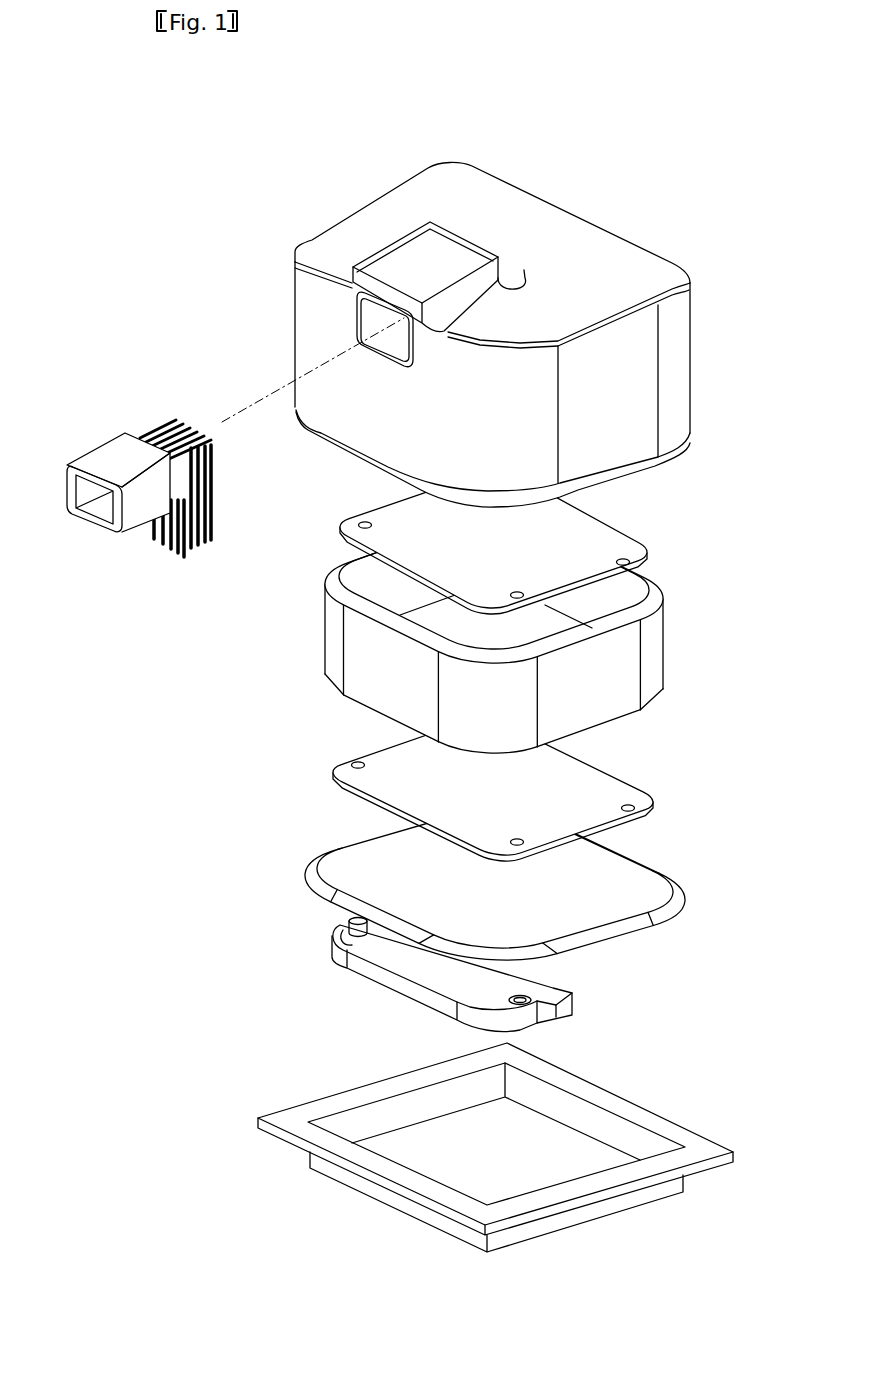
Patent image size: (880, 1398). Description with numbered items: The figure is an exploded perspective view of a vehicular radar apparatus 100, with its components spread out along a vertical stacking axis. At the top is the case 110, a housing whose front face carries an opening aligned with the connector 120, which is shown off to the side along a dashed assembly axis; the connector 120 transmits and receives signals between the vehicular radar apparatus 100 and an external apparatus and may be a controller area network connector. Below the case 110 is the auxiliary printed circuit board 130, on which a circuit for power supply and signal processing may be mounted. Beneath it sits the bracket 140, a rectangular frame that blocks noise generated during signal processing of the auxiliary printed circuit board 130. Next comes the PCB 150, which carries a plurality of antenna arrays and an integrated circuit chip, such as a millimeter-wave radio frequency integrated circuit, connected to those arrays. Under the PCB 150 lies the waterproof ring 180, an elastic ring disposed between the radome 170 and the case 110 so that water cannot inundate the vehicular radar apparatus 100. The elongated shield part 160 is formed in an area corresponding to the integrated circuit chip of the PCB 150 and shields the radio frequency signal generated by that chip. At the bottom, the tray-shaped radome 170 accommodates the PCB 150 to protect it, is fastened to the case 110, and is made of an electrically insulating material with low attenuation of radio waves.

The vehicular radar apparatus 100 is at (579, 167).
The case 110 is at (673, 365).
The connector 120 is at (100, 452).
The auxiliary printed circuit board 130 is at (612, 535).
The bracket 140 is at (653, 655).
The PCB 150 is at (610, 777).
The shield part 160 is at (563, 1003).
The radome 170 is at (595, 1092).
The waterproof ring 180 is at (610, 855).